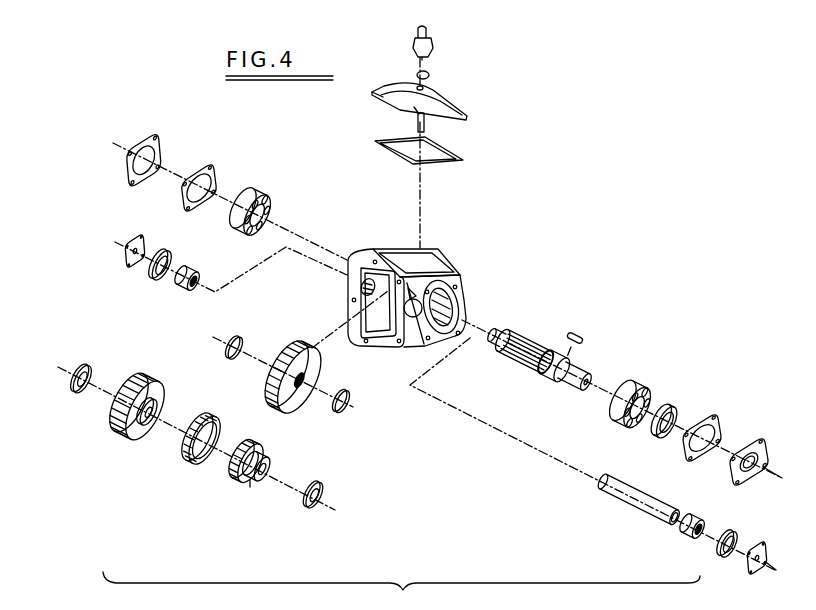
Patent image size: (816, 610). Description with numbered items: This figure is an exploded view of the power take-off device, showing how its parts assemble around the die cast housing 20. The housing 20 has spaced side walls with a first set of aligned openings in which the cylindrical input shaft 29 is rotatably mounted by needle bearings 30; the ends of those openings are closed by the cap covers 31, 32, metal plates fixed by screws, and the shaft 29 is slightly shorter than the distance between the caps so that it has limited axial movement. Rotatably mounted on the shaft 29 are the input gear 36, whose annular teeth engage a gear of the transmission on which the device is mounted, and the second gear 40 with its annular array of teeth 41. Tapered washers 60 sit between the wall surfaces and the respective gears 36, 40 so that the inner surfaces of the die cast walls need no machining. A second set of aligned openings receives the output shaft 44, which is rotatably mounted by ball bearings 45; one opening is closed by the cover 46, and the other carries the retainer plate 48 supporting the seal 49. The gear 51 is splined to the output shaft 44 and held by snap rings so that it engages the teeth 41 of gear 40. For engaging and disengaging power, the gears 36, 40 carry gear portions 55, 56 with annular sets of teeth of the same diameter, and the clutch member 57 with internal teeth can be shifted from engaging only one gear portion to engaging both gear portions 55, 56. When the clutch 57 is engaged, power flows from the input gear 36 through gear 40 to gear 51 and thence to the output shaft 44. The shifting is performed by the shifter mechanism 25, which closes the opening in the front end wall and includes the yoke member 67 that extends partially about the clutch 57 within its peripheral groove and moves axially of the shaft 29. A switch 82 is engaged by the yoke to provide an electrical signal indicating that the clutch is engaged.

The housing 20 is at (455, 262).
The shifter mechanism 25 is at (452, 99).
The input shaft 29 is at (642, 502).
The needle bearings 30 is at (191, 271).
The cap cover 31 is at (122, 264).
The cap cover 32 is at (760, 545).
The input gear 36 is at (164, 399).
The second gear 40 is at (273, 467).
The teeth 41 is at (250, 488).
The output shaft 44 is at (534, 343).
The ball bearings 45 is at (260, 188).
The cover 46 is at (165, 138).
The retainer plate 48 is at (753, 433).
The seal 49 is at (675, 410).
The gear 51 is at (281, 341).
The gear portion 55 is at (163, 398).
The gear portion 56 is at (281, 463).
The clutch member 57 is at (218, 430).
The tapered washers 60 is at (83, 367).
The yoke member 67 is at (427, 127).
The switch 82 is at (432, 39).